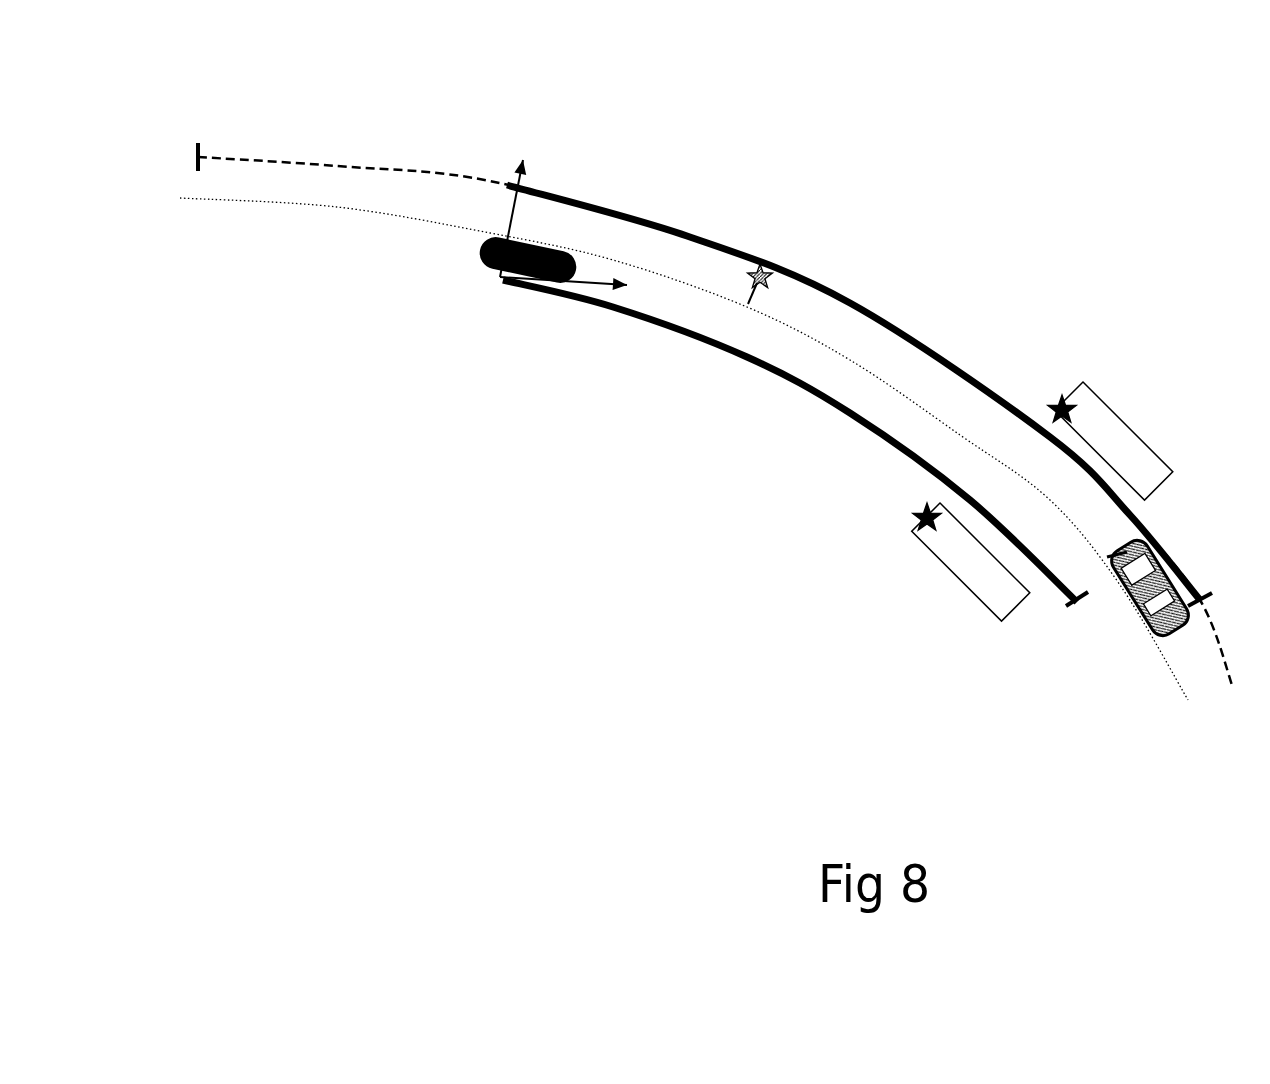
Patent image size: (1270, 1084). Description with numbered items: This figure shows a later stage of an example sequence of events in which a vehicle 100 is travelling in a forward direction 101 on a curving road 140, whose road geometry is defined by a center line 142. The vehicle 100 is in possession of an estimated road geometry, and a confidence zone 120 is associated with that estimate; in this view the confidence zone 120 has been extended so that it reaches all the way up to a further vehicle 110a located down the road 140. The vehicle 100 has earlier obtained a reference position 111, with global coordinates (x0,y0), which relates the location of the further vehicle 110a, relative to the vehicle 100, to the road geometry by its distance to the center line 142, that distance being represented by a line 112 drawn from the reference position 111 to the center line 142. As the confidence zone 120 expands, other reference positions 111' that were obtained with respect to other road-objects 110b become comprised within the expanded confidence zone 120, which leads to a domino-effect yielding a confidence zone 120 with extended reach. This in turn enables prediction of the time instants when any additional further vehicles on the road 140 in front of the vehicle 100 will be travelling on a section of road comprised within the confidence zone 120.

The vehicle 100 is at (487, 237).
The forward direction 101 is at (609, 275).
The further vehicle 110a is at (1127, 585).
The road-objects 110b is at (1042, 501).
The reference position 111 is at (881, 250).
The other reference positions 111' is at (914, 429).
The line 112 is at (1106, 540).
The confidence zone 120 is at (686, 232).
The road 140 is at (247, 157).
The center line 142 is at (343, 197).